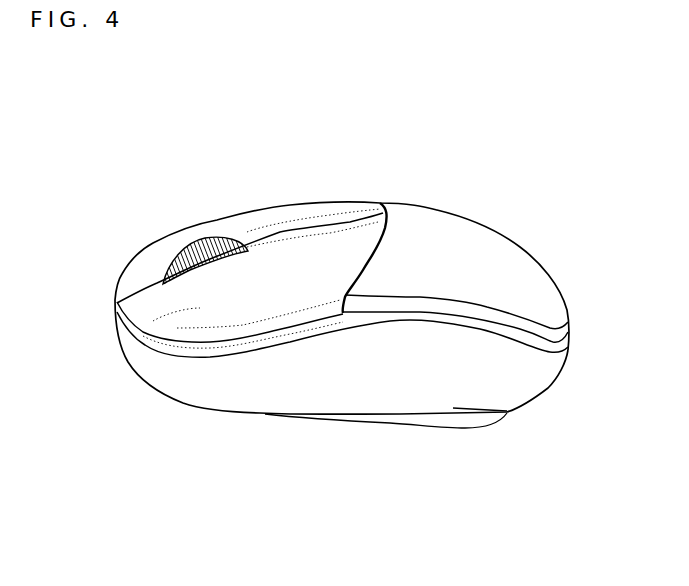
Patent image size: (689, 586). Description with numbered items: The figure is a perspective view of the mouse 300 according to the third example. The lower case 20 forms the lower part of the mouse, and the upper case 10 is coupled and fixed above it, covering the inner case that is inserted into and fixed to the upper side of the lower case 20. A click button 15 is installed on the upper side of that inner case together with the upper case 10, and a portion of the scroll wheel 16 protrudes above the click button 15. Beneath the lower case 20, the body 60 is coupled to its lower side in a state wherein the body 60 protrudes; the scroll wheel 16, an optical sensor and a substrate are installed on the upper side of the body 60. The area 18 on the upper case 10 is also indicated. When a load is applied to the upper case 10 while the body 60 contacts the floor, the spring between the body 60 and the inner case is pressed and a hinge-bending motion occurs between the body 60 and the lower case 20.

The mouse 300 is at (411, 178).
The upper case 10 is at (445, 268).
The button cover 18 is at (265, 209).
The scroll wheel 16 is at (193, 237).
The click button 15 is at (140, 325).
The lower case 20 is at (355, 378).
The body 60 is at (462, 430).